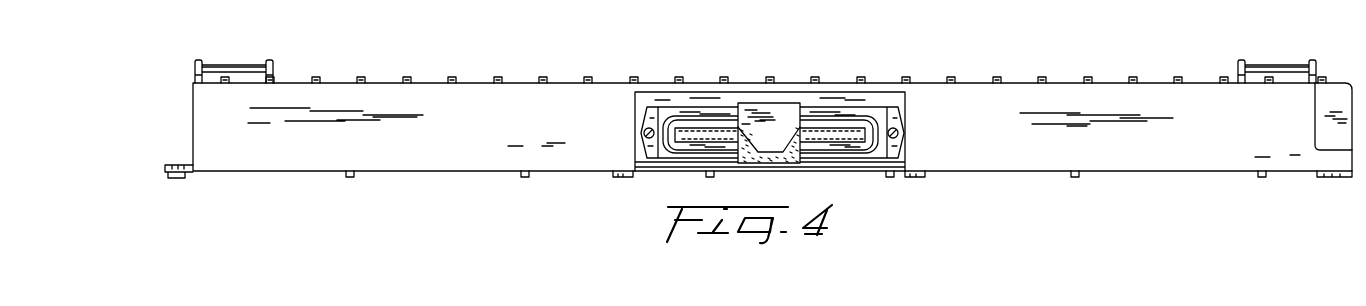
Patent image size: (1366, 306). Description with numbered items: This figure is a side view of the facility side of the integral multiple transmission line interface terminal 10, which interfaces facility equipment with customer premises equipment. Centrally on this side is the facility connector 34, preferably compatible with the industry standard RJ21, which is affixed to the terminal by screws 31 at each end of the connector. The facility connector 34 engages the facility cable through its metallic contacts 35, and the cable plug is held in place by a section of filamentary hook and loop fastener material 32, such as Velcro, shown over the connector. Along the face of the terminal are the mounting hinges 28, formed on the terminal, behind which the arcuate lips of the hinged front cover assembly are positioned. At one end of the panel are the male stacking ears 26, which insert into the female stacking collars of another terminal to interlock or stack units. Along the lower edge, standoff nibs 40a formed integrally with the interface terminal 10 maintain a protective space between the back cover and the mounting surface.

The interface terminal 10 is at (995, 61).
The male stacking ears 26 is at (168, 165).
The mounting hinges 28 is at (232, 63).
The screws 31 is at (744, 134).
The filamentary hook and loop fastener material 32 is at (777, 107).
The facility connector 34 is at (647, 115).
The metallic contacts 35 is at (673, 135).
The standoff nibs 40a is at (349, 178).